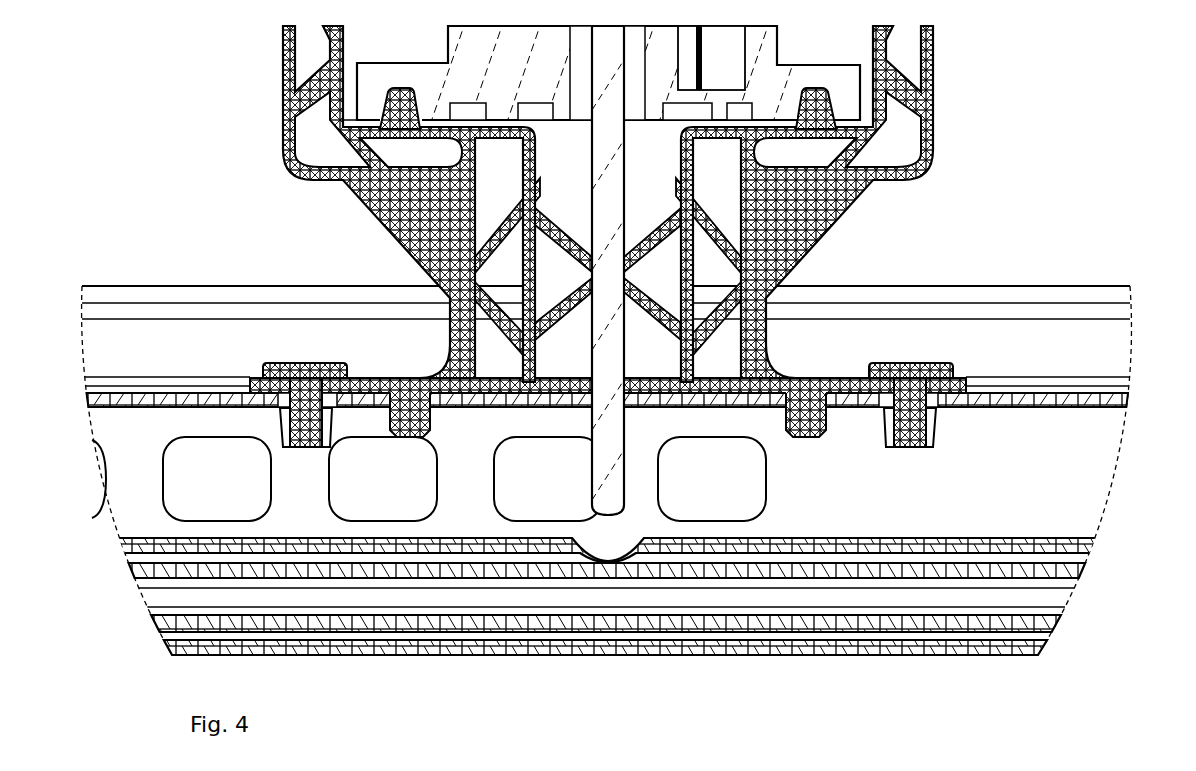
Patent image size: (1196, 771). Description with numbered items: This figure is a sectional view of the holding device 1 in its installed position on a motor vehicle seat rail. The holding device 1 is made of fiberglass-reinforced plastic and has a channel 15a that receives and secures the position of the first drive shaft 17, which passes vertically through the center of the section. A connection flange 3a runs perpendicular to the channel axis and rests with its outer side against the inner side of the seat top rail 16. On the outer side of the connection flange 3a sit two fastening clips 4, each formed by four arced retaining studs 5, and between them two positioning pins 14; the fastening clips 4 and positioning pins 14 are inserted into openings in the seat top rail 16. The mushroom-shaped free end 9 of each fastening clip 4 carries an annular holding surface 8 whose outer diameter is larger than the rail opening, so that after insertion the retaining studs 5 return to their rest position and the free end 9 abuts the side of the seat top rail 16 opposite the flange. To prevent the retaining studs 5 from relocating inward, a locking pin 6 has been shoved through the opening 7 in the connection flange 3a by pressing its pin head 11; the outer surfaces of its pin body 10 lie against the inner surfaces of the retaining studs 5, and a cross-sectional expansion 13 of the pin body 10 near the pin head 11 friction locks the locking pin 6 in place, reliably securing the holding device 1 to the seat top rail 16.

The holding device 1 is at (937, 100).
The connection flange 3a is at (822, 377).
The fastening clip 4 is at (310, 502).
The retaining stud 5 is at (280, 424).
The locking pin 6 is at (953, 358).
The opening 7 is at (290, 387).
The holding surface 8 is at (337, 413).
The free end 9 is at (293, 462).
The pin body 10 is at (940, 408).
The pin head 11 is at (305, 368).
The cross-sectional expansion 13 is at (905, 393).
The positioning pin 14 is at (813, 430).
The channel 15a is at (643, 362).
The seat top rail 16 is at (1096, 402).
The first drive shaft 17 is at (604, 358).